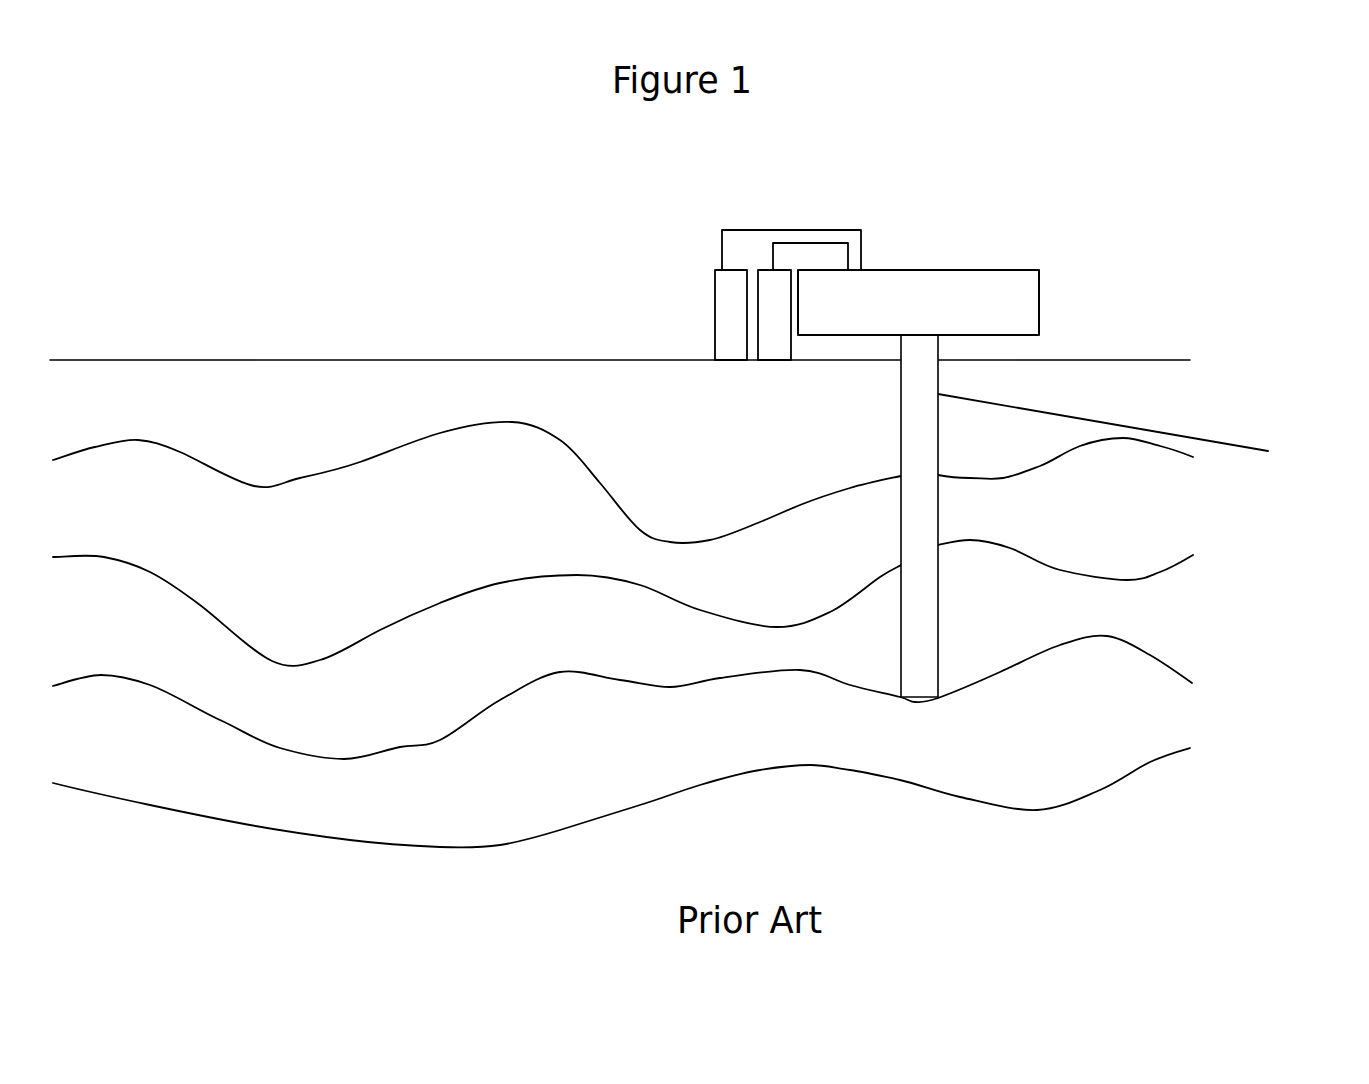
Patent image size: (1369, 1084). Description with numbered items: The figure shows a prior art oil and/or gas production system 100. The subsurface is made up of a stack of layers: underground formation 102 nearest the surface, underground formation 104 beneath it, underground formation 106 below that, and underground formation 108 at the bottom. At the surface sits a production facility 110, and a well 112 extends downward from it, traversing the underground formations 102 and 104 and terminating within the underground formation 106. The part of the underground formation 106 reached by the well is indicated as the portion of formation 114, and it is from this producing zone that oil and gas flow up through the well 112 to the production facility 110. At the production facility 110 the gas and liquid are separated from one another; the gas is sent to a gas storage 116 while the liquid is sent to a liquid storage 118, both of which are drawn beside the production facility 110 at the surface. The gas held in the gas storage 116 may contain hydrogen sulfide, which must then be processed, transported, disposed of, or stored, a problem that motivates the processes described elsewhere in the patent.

The prior art system 100 is at (505, 203).
The underground formation 102 is at (623, 477).
The underground formation 104 is at (623, 579).
The underground formation 106 is at (622, 669).
The underground formation 108 is at (621, 764).
The production facility 110 is at (939, 315).
The well 112 is at (1146, 431).
The portion of formation 114 is at (874, 659).
The gas storage 116 is at (773, 295).
The liquid storage 118 is at (735, 295).